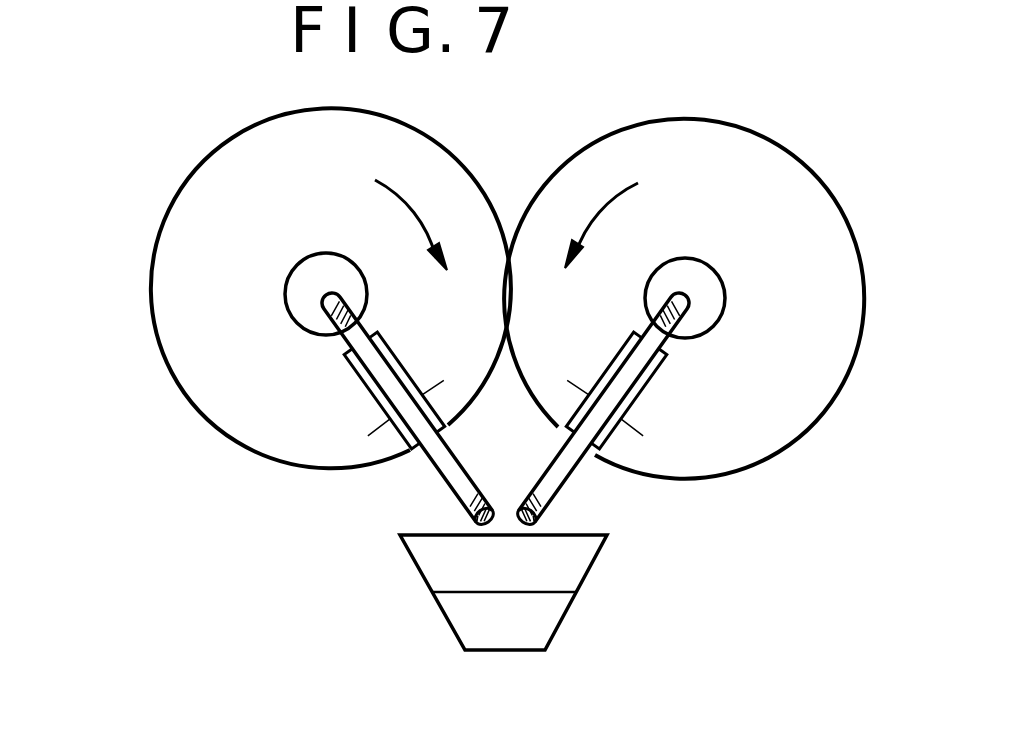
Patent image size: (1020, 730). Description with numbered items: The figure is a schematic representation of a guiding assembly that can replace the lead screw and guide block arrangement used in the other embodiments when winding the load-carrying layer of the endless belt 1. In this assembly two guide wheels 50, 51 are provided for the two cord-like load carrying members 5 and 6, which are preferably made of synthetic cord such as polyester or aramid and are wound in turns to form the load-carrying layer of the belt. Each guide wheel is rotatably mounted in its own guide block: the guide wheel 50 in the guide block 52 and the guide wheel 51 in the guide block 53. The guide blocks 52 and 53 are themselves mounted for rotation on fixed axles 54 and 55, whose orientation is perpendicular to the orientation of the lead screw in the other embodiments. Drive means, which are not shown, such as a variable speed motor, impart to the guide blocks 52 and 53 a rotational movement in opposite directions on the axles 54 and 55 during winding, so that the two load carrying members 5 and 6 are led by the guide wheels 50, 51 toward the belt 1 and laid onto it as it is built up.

The endless belt 1 is at (596, 597).
The load carrying member 5 is at (471, 526).
The load carrying member 6 is at (536, 526).
The guide wheel 50 is at (381, 386).
The guide wheel 51 is at (640, 381).
The guide block 52 is at (188, 263).
The guide block 53 is at (846, 297).
The fixed axle 54 is at (306, 281).
The fixed axle 55 is at (707, 293).